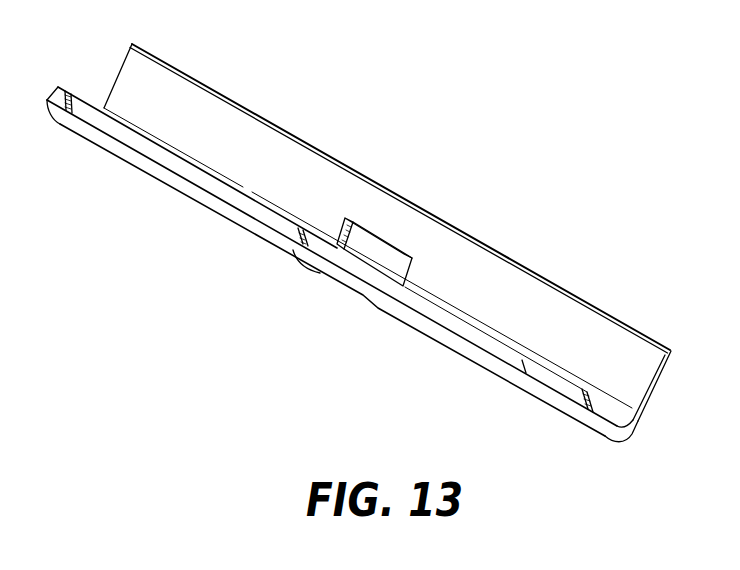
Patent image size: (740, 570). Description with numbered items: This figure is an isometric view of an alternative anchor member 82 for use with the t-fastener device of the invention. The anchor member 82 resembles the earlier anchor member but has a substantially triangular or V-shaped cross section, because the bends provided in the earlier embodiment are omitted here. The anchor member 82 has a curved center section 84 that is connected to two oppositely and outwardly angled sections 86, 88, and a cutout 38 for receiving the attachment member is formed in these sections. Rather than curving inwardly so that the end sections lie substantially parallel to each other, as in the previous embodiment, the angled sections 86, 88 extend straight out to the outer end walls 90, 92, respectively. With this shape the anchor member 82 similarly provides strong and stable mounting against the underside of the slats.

The anchor member 82 is at (203, 233).
The cutout 38 is at (366, 248).
The curved center section 84 is at (622, 420).
The angled section 86 is at (535, 390).
The angled section 88 is at (617, 357).
The outer end wall 90 is at (102, 123).
The outer end wall 92 is at (557, 280).